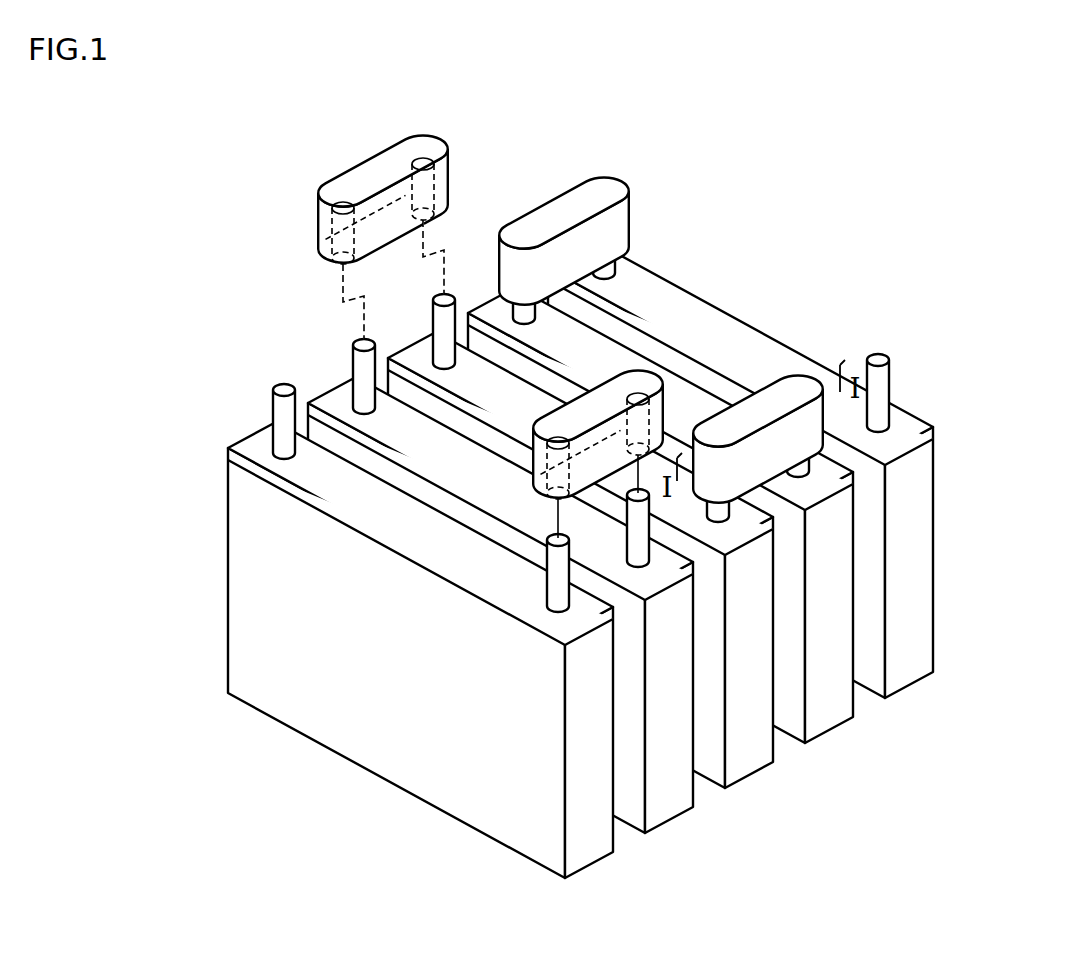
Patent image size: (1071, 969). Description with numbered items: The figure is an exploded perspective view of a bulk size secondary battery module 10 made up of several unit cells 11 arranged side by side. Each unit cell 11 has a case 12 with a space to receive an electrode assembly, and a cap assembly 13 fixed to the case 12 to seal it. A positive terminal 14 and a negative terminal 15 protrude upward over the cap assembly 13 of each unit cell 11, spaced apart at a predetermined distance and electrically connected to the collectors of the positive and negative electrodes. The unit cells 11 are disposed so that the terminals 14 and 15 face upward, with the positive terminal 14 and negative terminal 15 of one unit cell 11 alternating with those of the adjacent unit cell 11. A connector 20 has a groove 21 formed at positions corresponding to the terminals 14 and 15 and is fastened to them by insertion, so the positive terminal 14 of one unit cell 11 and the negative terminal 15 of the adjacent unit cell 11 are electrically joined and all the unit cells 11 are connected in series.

The secondary battery module 10 is at (538, 533).
The unit cell 11 is at (549, 586).
The case 12 is at (243, 620).
The cap assembly 13 is at (325, 477).
The positive terminal 14 is at (284, 387).
The negative terminal 15 is at (364, 342).
The connector 20 is at (570, 336).
The groove 21 is at (414, 219).